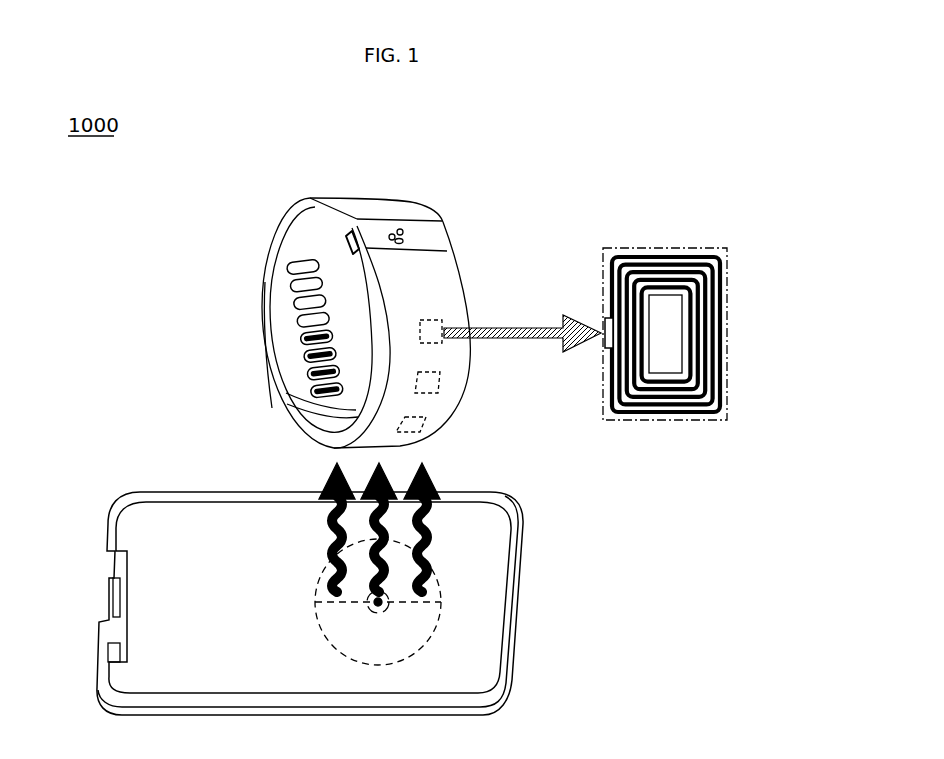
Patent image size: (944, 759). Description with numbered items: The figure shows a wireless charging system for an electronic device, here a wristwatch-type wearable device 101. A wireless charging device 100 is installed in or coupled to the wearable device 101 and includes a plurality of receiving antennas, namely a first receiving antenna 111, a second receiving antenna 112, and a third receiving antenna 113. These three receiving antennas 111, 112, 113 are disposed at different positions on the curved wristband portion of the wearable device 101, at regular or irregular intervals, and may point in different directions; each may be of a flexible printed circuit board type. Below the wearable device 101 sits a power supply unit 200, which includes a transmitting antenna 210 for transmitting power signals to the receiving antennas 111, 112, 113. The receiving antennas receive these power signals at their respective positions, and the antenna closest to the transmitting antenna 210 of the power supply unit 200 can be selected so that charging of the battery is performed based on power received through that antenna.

The wireless charging device 100 is at (445, 189).
The wearable device 101 is at (375, 205).
The first receiving antenna 111 is at (429, 325).
The second receiving antenna 112 is at (435, 378).
The third receiving antenna 113 is at (422, 423).
The power supply unit 200 is at (526, 497).
The transmitting antenna 210 is at (427, 622).